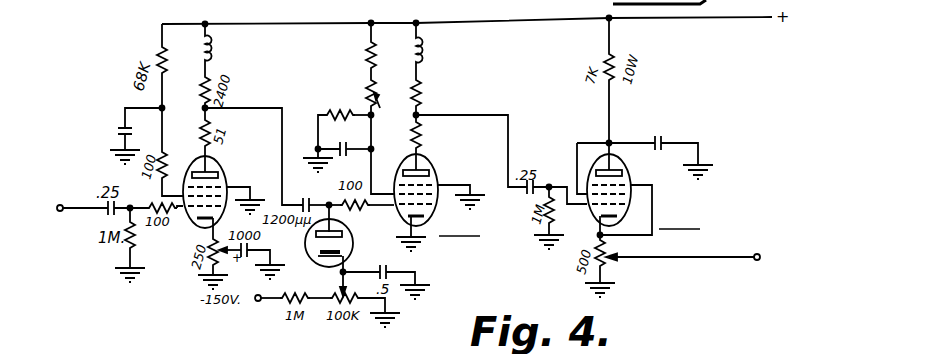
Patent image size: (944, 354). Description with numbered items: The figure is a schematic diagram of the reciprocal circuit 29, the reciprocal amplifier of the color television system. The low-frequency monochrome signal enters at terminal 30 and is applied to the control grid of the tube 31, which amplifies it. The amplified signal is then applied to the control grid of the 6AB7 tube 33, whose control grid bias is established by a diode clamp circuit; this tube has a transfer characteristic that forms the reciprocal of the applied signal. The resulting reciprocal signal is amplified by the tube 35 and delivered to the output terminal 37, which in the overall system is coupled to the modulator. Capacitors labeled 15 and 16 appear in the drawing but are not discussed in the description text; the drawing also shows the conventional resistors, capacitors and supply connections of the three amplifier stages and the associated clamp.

The capacitor 15 is at (118, 133).
The capacitor 16 is at (661, 145).
The reciprocal circuit 29 is at (425, 107).
The terminal 30 is at (62, 203).
The tube 31 is at (224, 172).
The 6AB7 tube 33 is at (438, 172).
The tube 35 is at (593, 143).
The output terminal 37 is at (760, 255).